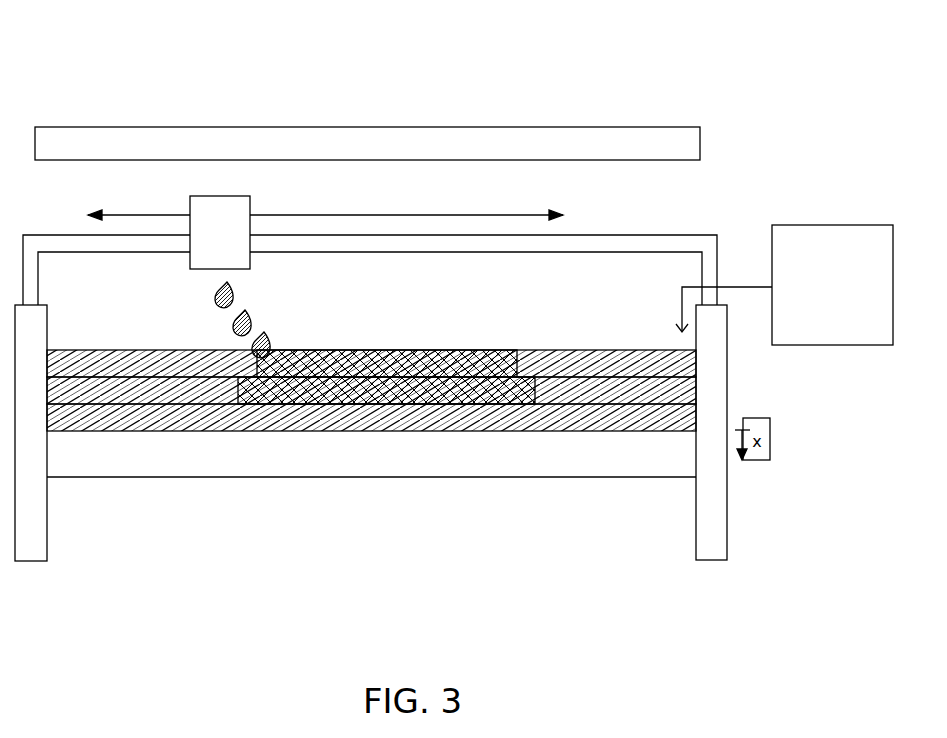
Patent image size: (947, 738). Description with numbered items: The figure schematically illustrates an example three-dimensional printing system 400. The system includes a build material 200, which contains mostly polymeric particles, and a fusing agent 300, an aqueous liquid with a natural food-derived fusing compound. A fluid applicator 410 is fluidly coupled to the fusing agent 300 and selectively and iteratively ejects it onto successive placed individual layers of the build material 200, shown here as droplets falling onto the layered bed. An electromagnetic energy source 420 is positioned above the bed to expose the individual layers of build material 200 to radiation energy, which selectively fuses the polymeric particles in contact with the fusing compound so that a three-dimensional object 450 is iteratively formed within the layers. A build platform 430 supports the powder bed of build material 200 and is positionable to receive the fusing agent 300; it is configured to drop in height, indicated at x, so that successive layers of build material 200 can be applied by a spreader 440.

The three-dimensional printing system 400 is at (152, 72).
The electromagnetic energy source 420 is at (347, 153).
The fluid applicator 410 is at (199, 243).
The fusing agent 300 is at (217, 296).
The spreader 440 is at (784, 285).
The build platform 430 is at (176, 455).
The build material 200 is at (353, 417).
The three-dimensional object 450 is at (400, 362).